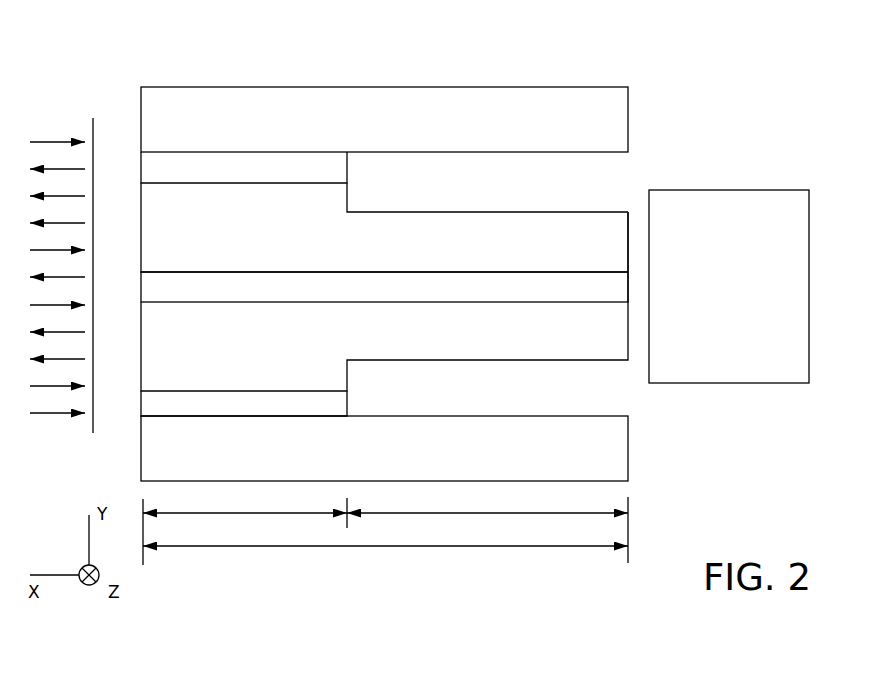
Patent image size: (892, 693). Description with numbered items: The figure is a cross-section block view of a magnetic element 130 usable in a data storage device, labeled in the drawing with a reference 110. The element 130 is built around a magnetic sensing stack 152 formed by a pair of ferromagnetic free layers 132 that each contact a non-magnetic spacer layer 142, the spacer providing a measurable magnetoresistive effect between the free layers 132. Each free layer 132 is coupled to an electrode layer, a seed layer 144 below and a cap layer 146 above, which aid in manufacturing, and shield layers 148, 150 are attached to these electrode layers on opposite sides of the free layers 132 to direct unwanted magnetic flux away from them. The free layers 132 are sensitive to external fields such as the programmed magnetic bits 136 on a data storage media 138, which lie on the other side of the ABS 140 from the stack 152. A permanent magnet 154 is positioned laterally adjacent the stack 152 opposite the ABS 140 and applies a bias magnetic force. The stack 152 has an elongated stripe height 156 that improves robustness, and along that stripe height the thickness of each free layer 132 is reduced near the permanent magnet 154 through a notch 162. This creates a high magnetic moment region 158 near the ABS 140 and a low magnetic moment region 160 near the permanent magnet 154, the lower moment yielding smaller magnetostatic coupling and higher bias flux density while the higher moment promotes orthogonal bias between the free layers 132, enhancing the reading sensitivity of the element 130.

The magnetic recording medium 110 is at (453, 3).
The magnetic element 130 is at (689, 32).
The first ferromagnetic free layer 132 is at (384, 287).
The programmed magnetic bits 136 is at (64, 109).
The data storage media 138 is at (93, 444).
The ABS 140 is at (122, 96).
The non-magnetic spacer layer 142 is at (384, 287).
The seed layer 144 is at (347, 398).
The cap layer 146 is at (348, 165).
The shield layer 148 is at (384, 119).
The shield layer 150 is at (384, 448).
The magnetic sensing stack 152 is at (627, 209).
The permanent magnet 154 is at (729, 286).
The stripe height 156 is at (385, 556).
The high magnetic moment region 158 is at (245, 531).
The low magnetic moment region 160 is at (487, 530).
The notch 162 is at (359, 204).